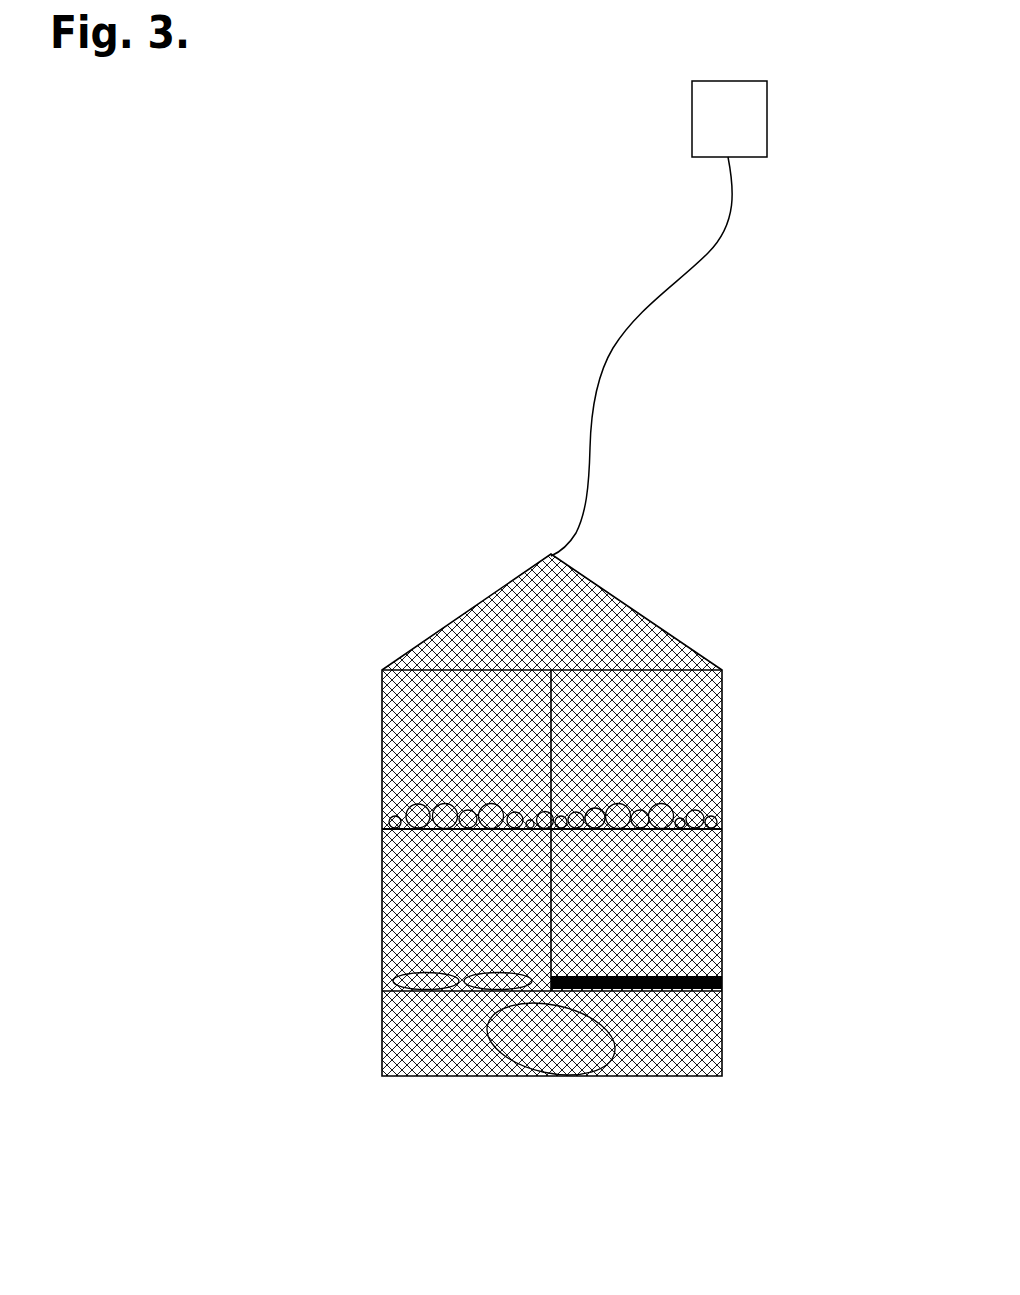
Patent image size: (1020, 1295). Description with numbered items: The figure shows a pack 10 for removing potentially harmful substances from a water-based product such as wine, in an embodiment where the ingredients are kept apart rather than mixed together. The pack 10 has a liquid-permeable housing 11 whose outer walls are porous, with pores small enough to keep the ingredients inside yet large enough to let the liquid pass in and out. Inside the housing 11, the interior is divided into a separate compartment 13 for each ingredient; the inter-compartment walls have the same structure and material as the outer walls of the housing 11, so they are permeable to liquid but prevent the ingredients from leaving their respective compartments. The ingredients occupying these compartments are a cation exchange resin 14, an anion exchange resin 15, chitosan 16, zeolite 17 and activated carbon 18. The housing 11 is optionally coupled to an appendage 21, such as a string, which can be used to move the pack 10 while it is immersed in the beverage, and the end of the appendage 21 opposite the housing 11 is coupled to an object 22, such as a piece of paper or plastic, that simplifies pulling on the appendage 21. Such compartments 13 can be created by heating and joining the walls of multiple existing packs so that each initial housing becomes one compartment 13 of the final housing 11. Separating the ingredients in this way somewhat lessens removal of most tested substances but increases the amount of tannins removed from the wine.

The pack 10 is at (143, 95).
The liquid-permeable housing 11 is at (713, 661).
The compartment 13 is at (398, 708).
The cation exchange resin 14 is at (390, 803).
The anion exchange resin 15 is at (702, 803).
The chitosan 16 is at (403, 958).
The zeolite 17 is at (477, 1048).
The activated carbon 18 is at (695, 950).
The appendage 21 is at (581, 465).
The object 22 is at (759, 107).